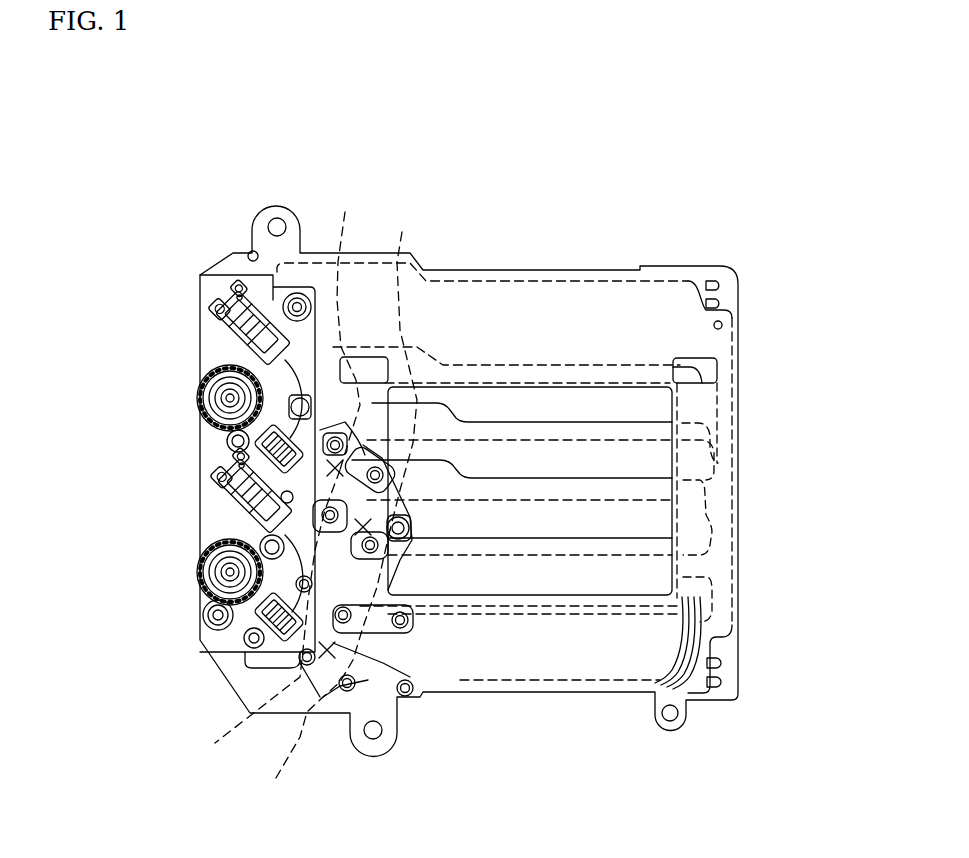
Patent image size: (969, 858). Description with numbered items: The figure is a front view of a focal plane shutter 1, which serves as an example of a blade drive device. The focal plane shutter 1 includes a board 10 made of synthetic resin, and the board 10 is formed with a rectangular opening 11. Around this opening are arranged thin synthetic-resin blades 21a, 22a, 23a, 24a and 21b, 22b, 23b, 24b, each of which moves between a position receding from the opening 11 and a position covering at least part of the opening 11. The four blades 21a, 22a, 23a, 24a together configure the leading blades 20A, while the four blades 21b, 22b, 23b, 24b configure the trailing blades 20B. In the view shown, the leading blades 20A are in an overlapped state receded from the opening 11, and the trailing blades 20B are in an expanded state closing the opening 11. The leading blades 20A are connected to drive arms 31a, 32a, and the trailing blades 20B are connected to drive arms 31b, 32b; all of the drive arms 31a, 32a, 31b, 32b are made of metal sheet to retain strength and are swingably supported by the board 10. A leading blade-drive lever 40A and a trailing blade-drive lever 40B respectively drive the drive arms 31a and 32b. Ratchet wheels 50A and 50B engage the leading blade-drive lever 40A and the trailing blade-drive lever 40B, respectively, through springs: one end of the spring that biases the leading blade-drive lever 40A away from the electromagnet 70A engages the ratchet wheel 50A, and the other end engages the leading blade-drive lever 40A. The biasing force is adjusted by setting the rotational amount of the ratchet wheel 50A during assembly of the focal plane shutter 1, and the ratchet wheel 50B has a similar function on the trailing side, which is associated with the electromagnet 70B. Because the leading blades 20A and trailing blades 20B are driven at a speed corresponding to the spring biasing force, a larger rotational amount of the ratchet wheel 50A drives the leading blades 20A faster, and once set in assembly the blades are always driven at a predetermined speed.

The focal plane shutter 1 is at (712, 200).
The board 10 is at (741, 691).
The opening 11 is at (620, 388).
The leading blades 20A is at (770, 800).
The trailing blades 20B is at (818, 418).
The blade 21a is at (593, 673).
The blade 22a is at (656, 696).
The blade 23a is at (695, 696).
The blade 24a is at (722, 696).
The blade 21b is at (740, 579).
The blade 22b is at (740, 518).
The blade 23b is at (737, 463).
The blade 24b is at (737, 427).
The drive arm 31a is at (321, 669).
The drive arm 31b is at (409, 368).
The drive arm 32a is at (256, 618).
The drive arm 32b is at (352, 326).
The leading blade-drive lever 40A is at (240, 633).
The trailing blade-drive lever 40B is at (210, 433).
The ratchet wheel 50A is at (197, 568).
The ratchet wheel 50B is at (198, 392).
The electromagnet 70A is at (207, 487).
The electromagnet 70B is at (213, 330).